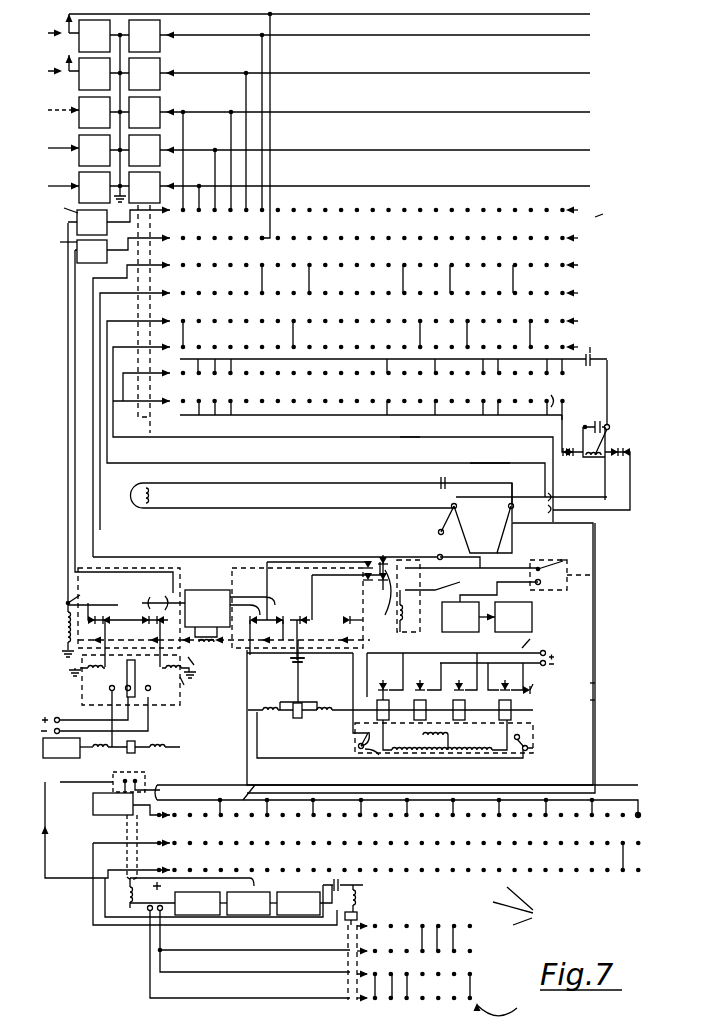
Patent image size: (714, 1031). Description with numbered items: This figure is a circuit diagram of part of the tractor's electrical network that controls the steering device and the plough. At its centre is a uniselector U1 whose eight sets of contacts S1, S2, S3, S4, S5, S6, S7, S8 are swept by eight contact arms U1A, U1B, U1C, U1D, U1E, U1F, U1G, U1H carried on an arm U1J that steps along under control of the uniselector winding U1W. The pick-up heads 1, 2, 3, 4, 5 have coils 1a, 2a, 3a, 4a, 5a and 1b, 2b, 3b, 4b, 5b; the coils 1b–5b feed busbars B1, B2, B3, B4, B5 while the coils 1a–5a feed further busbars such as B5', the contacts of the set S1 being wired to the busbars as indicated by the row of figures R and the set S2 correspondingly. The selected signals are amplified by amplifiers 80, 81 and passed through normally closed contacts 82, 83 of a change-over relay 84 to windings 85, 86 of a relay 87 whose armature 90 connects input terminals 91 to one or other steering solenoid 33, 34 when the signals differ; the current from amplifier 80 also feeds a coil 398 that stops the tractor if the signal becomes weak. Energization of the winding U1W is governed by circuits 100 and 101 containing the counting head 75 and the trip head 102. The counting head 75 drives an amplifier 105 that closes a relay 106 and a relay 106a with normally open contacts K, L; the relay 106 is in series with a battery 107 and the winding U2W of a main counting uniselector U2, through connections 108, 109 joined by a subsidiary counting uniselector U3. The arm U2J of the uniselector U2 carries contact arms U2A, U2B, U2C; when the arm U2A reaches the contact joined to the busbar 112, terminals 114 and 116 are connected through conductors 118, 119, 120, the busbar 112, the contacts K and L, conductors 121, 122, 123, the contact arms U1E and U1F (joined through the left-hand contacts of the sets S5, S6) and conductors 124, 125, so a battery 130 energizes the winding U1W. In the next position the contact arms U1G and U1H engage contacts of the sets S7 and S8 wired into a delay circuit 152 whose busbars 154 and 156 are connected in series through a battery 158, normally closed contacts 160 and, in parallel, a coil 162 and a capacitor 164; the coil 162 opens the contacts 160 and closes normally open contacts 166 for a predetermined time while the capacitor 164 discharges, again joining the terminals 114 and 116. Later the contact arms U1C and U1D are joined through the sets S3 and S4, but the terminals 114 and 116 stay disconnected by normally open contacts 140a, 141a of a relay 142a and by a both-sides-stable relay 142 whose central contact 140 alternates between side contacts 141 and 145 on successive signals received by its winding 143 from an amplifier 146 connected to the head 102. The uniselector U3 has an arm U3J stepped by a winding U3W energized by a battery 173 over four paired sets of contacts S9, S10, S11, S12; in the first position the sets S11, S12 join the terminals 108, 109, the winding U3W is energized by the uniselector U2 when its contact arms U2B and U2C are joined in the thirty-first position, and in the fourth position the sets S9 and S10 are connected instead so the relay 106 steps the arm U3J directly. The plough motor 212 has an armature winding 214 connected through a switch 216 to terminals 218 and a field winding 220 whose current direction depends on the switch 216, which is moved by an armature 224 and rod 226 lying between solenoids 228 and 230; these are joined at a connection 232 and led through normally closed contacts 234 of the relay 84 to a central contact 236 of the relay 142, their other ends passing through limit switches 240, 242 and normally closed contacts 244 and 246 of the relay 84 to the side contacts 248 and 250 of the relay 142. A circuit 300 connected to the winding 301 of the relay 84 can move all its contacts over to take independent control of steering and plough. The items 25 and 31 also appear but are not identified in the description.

The pick-up head 5 is at (56, 25).
The pick-up head 4 is at (56, 64).
The pick-up head 3 is at (56, 103).
The pick-up head 2 is at (56, 141).
The pick-up head 1 is at (56, 179).
The coil 5a is at (94, 36).
The coil 5b is at (144, 36).
The coil 4a is at (94, 74).
The coil 4b is at (144, 74).
The coil 3a is at (94, 112).
The coil 3b is at (144, 112).
The coil 2a is at (94, 150).
The coil 2b is at (144, 150).
The coil 1a is at (94, 187).
The coil 1b is at (144, 187).
The busbar B5' is at (345, 17).
The busbar B5 is at (388, 37).
The busbar B4 is at (388, 75).
The busbar B3 is at (388, 113).
The busbar B2 is at (388, 151).
The busbar B1 is at (388, 187).
The set of contacts S1 is at (391, 210).
The set of contacts S2 is at (391, 239).
The set of contacts S3 is at (391, 274).
The set of contacts S4 is at (391, 293).
The set of contacts S5 is at (391, 329).
The set of contacts S6 is at (391, 347).
The set of contacts S7 is at (568, 375).
The set of contacts S8 is at (567, 402).
The set of contacts S9 is at (480, 926).
The set of contacts S10 is at (480, 951).
The set of contacts S11 is at (480, 974).
The set of contacts S12 is at (480, 998).
The row of figures R is at (571, 229).
The uniselector U1 is at (611, 211).
The contact arm U1A is at (59, 207).
The contact arm U1B is at (56, 241).
The contact arm U1C is at (90, 284).
The contact arm U1D is at (100, 297).
The contact arm U1E is at (107, 338).
The contact arm U1F is at (113, 356).
The contact arm U1G is at (123, 375).
The contact arm U1H is at (120, 401).
The arm U1J is at (159, 321).
The uniselector winding U1W is at (148, 485).
The amplifier 80 is at (119, 221).
The amplifier 81 is at (122, 249).
The busbar 154 is at (597, 351).
The battery 158 is at (597, 356).
The delay circuit 152 is at (607, 368).
The coil 162 is at (607, 423).
The normally-closed contacts 160 is at (577, 459).
The capacitor 164 is at (562, 417).
The normally open contacts 166 is at (628, 452).
The busbar 156 is at (545, 392).
The conductor 123 is at (411, 438).
The conductor 124 is at (479, 462).
The conductor 125 is at (513, 504).
The battery 130 is at (437, 485).
The terminal 114 is at (458, 507).
The terminal 116 is at (512, 507).
The conductor 118 is at (593, 526).
The conductor 120 is at (318, 791).
The side contact 145 is at (438, 557).
The central contact 140 is at (431, 569).
The side contact 141 is at (411, 595).
The normally open contacts 140a is at (535, 566).
The normally open contacts 141a is at (570, 559).
The relay 142a is at (602, 574).
The amplifier 146 is at (468, 617).
The trip head 102 is at (513, 617).
The circuit 101 is at (511, 645).
The relay winding 143 is at (410, 637).
The both-sides-stable relay 142 is at (442, 637).
The side contact 250 is at (384, 602).
The side contact 248 is at (368, 566).
The central contact 236 is at (368, 580).
The normally closed contacts 246 is at (360, 614).
The normally closed contacts 244 is at (285, 627).
The normally closed contacts 234 is at (316, 620).
The circuit 300 is at (207, 608).
The winding 301 is at (219, 649).
The normally closed contacts 83 is at (163, 604).
The normally closed contacts 82 is at (106, 621).
The coil 398 is at (95, 598).
The winding 85 is at (90, 673).
The winding 86 is at (170, 673).
The relay 87 is at (195, 691).
The change-over relay 84 is at (194, 665).
The armature 90 is at (142, 678).
The input terminals 91 is at (63, 718).
The unit 25 is at (68, 748).
The solenoid 34 is at (101, 752).
The resistor 31 is at (132, 754).
The solenoid 33 is at (156, 752).
The normally open contact K is at (125, 781).
The normally open contact L is at (137, 781).
The relay 106a is at (131, 806).
The conductor 121 is at (212, 775).
The busbar 112 is at (255, 785).
The limit switch 242 is at (380, 756).
The connection 232 is at (298, 700).
The solenoid 228 is at (279, 707).
The solenoid 230 is at (321, 710).
The armature 224 is at (297, 718).
The rod 226 is at (370, 697).
The field winding 220 is at (445, 735).
The armature winding 214 is at (508, 738).
The limit switch 240 is at (537, 740).
The electric motor 212 is at (535, 757).
The terminals 218 is at (545, 680).
The electric switch 216 is at (534, 692).
The conductor 122 is at (598, 684).
The conductor 119 is at (598, 701).
The contact arm U2A is at (93, 807).
The contact arm U2B is at (93, 846).
The contact arm U2C is at (100, 868).
The arm U2J is at (120, 867).
The winding U2W is at (126, 893).
The battery 107 is at (152, 893).
The relay 106 is at (201, 903).
The amplifier 105 is at (252, 903).
The counting head 75 is at (304, 900).
The battery 173 is at (346, 886).
The winding U3W is at (357, 905).
The connection 108 is at (149, 914).
The connection 109 is at (163, 914).
The arm U3J is at (347, 993).
The subsidiary counting uniselector U3 is at (505, 1003).
The circuit 100 is at (528, 906).
The main counting uniselector U2 is at (638, 875).